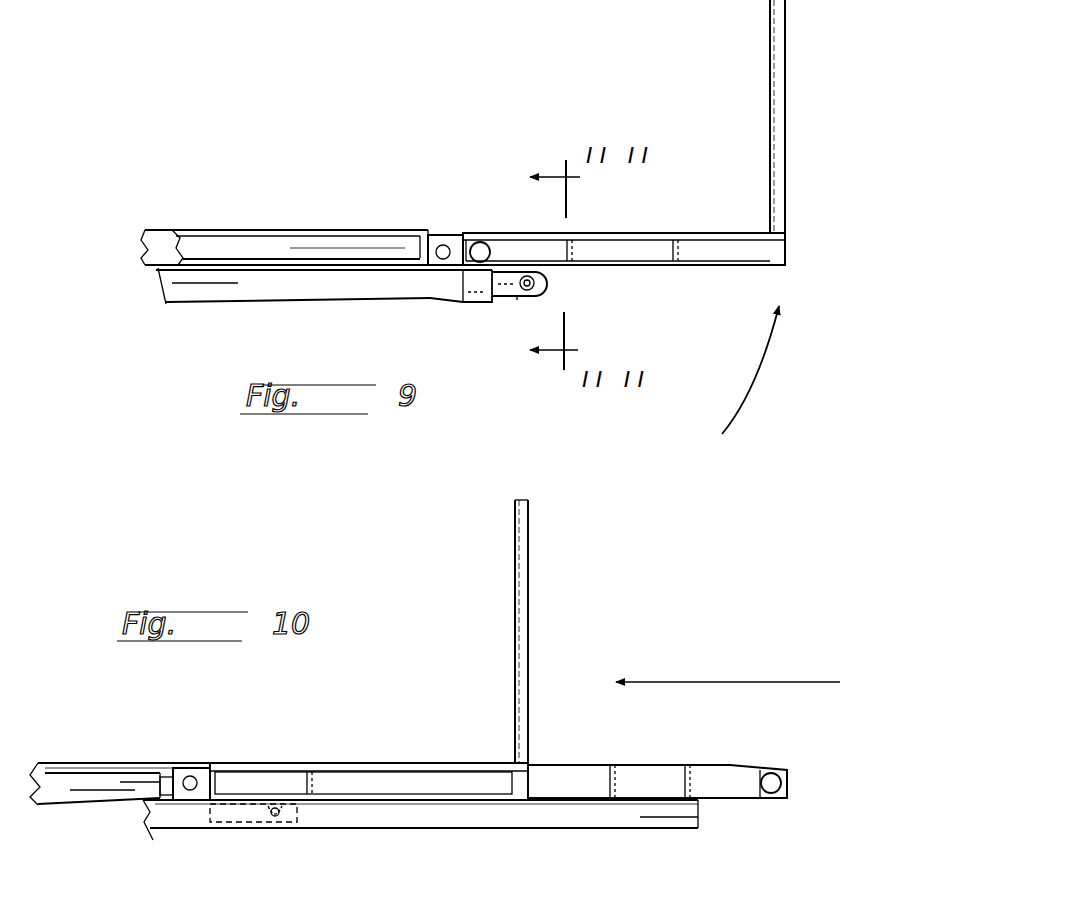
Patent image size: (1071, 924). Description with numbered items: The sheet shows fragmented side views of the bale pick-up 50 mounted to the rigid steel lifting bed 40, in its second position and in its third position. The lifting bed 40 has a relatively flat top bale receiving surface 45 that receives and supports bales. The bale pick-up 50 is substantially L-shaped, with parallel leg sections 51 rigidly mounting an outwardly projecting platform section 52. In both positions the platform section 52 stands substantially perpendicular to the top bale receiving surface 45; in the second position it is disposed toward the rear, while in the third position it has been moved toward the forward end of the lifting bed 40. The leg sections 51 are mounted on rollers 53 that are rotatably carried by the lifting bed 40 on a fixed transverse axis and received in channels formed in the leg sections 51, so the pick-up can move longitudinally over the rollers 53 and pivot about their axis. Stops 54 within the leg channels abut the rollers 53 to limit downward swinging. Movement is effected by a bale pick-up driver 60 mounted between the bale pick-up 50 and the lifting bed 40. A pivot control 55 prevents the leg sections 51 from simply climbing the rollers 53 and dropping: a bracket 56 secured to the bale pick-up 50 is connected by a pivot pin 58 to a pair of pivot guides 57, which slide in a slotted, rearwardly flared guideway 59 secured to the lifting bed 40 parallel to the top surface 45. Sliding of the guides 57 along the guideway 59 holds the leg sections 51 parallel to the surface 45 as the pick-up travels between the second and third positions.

In FIG. 9, the lifting bed 40 is at (157, 226).
In FIG. 10, the lifting bed 40 is at (578, 762).
In FIG. 9, the top bale receiving surface 45 is at (252, 228).
In FIG. 10, the top bale receiving surface 45 is at (107, 762).
In FIG. 9, the bale pick-up 50 is at (699, 220).
In FIG. 10, the bale pick-up 50 is at (441, 756).
In FIG. 9, the leg sections 51 is at (608, 250).
In FIG. 10, the leg sections 51 is at (340, 780).
In FIG. 9, the platform section 52 is at (776, 104).
In FIG. 10, the platform section 52 is at (520, 638).
In FIG. 9, the rollers 53 is at (480, 250).
In FIG. 10, the rollers 53 is at (770, 786).
In FIG. 9, the stops 54 is at (460, 240).
In FIG. 10, the stops 54 is at (200, 776).
In FIG. 9, the pivot control 55 is at (517, 300).
In FIG. 9, the bracket 56 is at (553, 279).
In FIG. 9, the pivot guides 57 is at (495, 305).
In FIG. 9, the pivot pin 58 is at (545, 293).
In FIG. 10, the pivot pin 58 is at (272, 838).
In FIG. 9, the guideway 59 is at (377, 300).
In FIG. 10, the guideway 59 is at (432, 830).
In FIG. 9, the bale pick-up driver 60 is at (328, 228).
In FIG. 10, the bale pick-up driver 60 is at (67, 762).